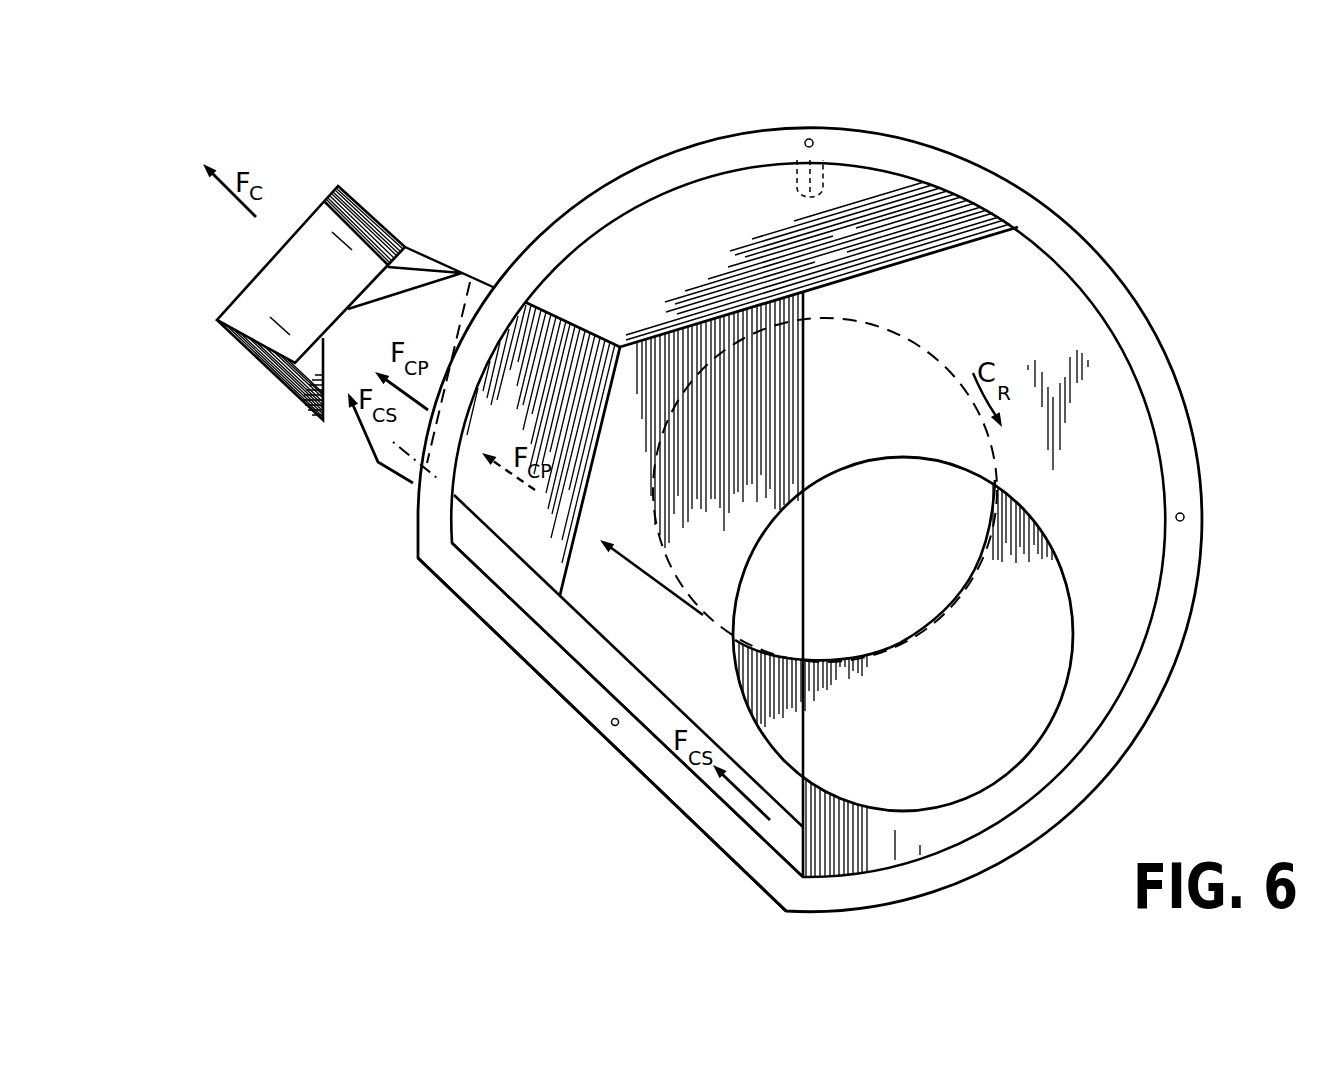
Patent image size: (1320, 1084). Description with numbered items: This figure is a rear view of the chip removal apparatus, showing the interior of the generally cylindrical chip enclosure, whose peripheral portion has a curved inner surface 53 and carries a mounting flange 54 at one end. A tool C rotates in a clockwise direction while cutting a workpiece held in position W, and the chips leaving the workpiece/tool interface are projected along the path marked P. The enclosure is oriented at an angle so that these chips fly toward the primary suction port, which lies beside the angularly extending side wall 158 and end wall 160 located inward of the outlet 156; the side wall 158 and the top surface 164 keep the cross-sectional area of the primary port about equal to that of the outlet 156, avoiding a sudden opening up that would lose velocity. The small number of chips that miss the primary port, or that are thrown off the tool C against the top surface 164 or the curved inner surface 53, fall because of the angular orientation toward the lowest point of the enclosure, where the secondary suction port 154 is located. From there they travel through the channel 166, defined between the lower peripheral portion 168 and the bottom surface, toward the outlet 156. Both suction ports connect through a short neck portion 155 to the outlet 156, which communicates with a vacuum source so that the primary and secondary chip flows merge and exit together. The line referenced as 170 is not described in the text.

The curved inner surface 53 is at (1163, 480).
The mounting flange 54 is at (1137, 327).
The secondary suction port 154 is at (805, 858).
The neck portion 155 is at (462, 272).
The outlet 156 is at (260, 272).
The side wall 158 is at (533, 431).
The end wall 160 is at (575, 542).
The top surface 164 is at (930, 258).
The channel 166 is at (652, 727).
The lower peripheral portion 168 is at (607, 693).
The slot rail 170 is at (647, 675).
The workpiece position W is at (1062, 565).
The tool C is at (910, 342).
The projection of chips P is at (651, 577).